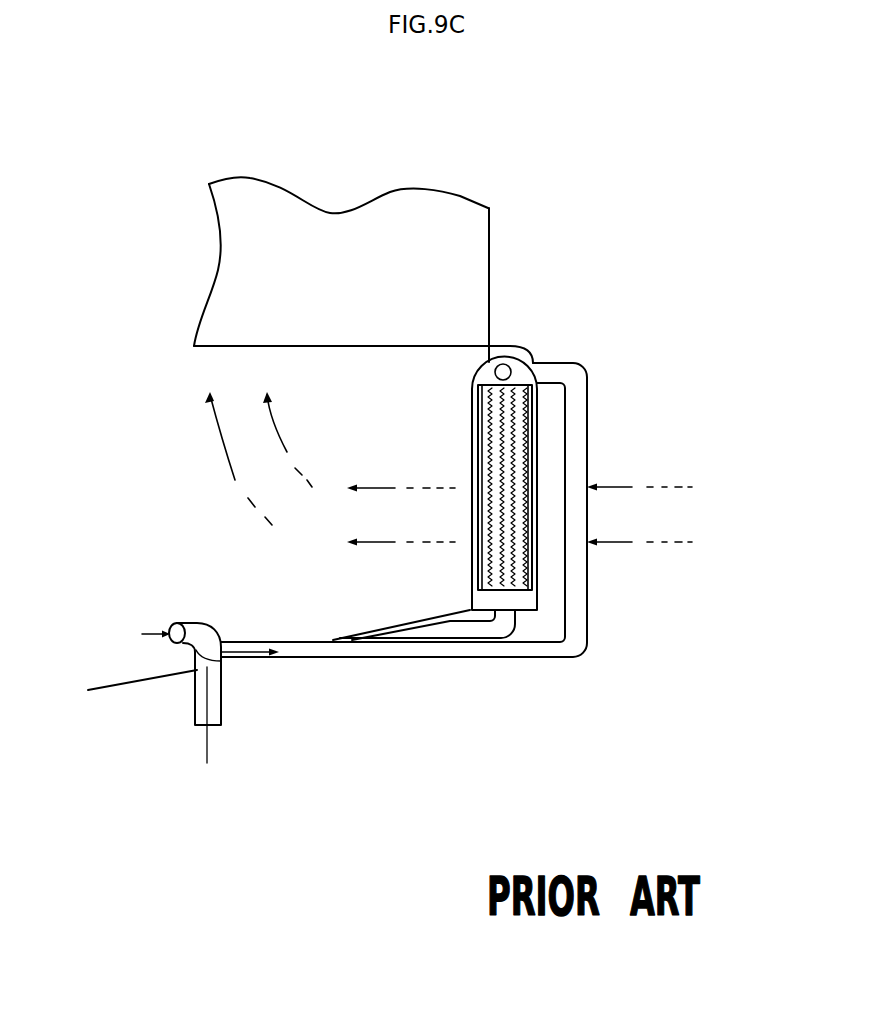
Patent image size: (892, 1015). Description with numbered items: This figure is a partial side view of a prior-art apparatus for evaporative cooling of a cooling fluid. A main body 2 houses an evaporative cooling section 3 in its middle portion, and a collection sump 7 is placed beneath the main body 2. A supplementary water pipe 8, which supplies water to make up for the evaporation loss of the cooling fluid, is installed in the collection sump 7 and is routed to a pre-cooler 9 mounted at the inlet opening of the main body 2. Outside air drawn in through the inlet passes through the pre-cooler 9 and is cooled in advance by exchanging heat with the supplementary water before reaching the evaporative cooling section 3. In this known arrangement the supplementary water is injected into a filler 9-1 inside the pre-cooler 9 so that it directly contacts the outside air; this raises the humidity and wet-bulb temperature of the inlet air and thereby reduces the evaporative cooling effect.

The main body 2 is at (489, 267).
The evaporative cooling section 3 is at (388, 223).
The collection sump 7 is at (123, 683).
The supplementary water pipe 8 is at (212, 698).
The pre-cooler 9 is at (535, 417).
The filler 9-1 is at (530, 458).